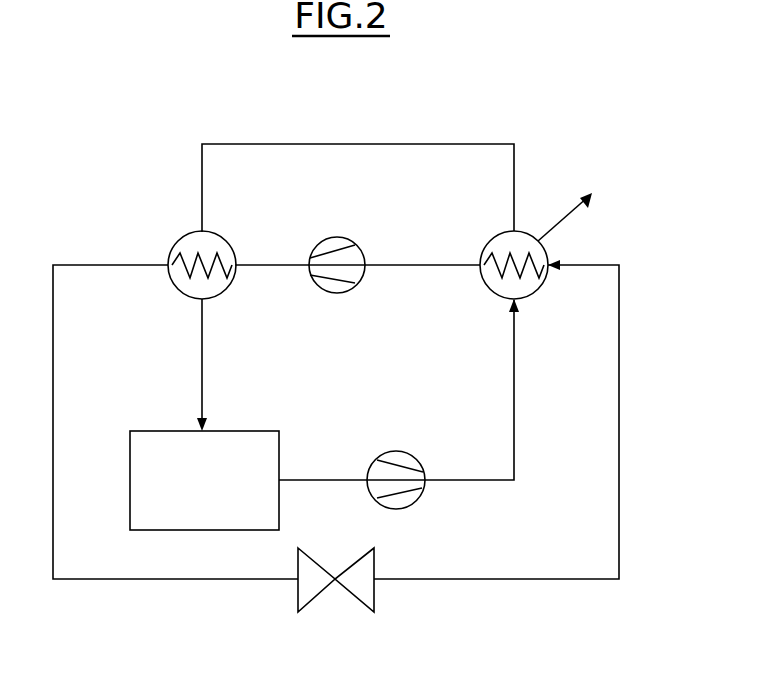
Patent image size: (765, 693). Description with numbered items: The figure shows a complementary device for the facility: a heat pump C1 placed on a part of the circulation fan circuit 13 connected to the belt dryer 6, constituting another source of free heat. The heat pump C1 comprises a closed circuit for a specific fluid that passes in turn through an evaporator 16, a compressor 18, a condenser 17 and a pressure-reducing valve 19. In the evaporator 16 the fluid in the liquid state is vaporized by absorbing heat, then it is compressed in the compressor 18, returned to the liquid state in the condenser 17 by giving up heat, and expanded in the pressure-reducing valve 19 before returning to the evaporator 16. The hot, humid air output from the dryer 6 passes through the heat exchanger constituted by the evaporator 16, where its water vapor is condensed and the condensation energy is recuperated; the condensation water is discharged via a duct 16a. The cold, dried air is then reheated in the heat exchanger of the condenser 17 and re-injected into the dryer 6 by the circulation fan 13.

The heat pump C1 is at (335, 130).
The condenser 17 is at (178, 236).
The compressor 18 is at (362, 256).
The evaporator 16 is at (485, 242).
The duct 16a is at (570, 218).
The belt dryer 6 is at (130, 458).
The circulation fan 13 is at (400, 451).
The pressure-reducing valve 19 is at (335, 582).